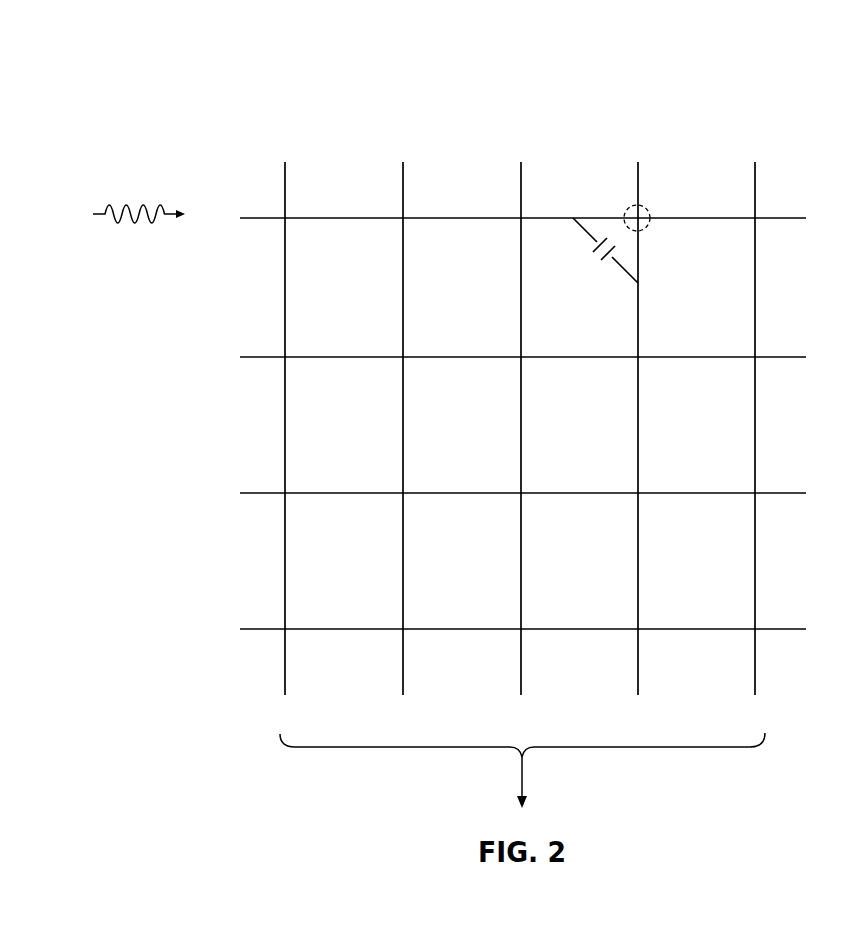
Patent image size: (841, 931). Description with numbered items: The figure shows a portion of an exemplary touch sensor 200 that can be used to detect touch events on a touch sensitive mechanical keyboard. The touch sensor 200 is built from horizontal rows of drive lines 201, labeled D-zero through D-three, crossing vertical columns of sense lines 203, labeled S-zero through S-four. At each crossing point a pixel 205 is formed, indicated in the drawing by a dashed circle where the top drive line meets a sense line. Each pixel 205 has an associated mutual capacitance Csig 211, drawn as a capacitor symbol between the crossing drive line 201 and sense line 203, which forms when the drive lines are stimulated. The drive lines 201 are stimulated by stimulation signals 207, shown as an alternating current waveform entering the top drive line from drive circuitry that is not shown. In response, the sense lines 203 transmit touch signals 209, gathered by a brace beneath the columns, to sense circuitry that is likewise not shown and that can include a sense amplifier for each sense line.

The touch sensor 200 is at (140, 82).
The drive line 201 is at (255, 217).
The sense line 203 is at (285, 168).
The pixel 205 is at (645, 208).
The stimulation signal 207 is at (132, 224).
The touch signals 209 is at (524, 788).
The mutual capacitance Csig 211 is at (592, 254).